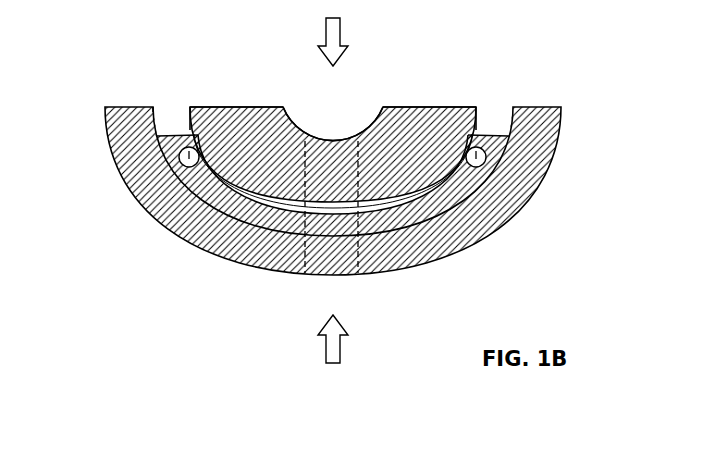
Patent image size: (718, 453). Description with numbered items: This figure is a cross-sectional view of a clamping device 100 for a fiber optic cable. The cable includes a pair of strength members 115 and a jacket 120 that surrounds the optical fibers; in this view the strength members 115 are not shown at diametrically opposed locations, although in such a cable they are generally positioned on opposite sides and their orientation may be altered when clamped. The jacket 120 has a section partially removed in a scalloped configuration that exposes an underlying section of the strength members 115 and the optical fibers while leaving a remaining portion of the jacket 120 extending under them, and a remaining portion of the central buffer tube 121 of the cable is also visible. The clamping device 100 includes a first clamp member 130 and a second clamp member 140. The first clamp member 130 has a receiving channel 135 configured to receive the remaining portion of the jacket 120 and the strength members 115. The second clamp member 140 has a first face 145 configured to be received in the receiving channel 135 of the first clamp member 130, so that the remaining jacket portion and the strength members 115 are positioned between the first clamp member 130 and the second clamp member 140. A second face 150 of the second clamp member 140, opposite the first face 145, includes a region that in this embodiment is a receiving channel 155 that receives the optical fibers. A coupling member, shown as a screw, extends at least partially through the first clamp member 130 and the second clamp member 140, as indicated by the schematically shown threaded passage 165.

The clamping device 100 is at (599, 80).
The strength members 115 is at (189, 158).
The jacket 120 is at (503, 134).
The central buffer tube 121 is at (188, 133).
The first clamp member 130 is at (412, 274).
The receiving channel 135 is at (165, 110).
The second clamp member 140 is at (389, 171).
The first face 145 is at (481, 133).
The second face 150 is at (376, 118).
The receiving channel 155 is at (311, 93).
The threaded passage 165 is at (298, 240).